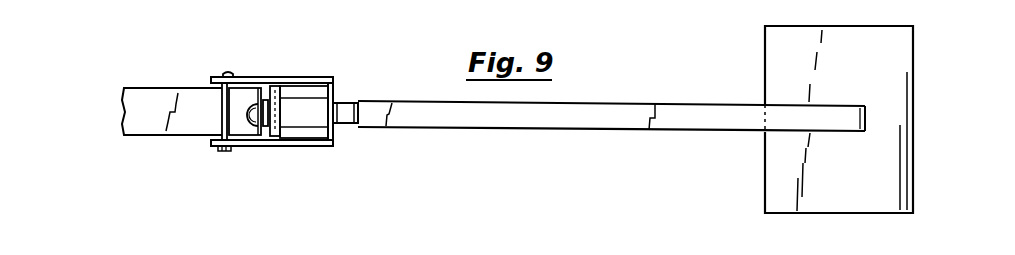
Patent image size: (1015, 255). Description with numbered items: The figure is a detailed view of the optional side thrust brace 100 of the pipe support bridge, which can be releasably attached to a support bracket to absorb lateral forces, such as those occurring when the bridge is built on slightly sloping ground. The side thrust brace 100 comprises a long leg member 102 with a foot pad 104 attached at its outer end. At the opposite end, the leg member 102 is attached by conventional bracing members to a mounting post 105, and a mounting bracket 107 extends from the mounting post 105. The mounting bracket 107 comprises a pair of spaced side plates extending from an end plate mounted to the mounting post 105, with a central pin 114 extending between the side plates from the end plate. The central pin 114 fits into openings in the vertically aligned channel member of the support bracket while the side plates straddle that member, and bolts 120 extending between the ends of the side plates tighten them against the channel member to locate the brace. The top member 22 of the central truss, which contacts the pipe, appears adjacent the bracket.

The top member 22 is at (150, 103).
The side thrust brace 100 is at (463, 160).
The leg member 102 is at (596, 112).
The foot pad 104 is at (905, 117).
The mounting post 105 is at (358, 103).
The mounting bracket 107 is at (285, 147).
The central pin 114 is at (301, 107).
The bolts 120 is at (220, 150).